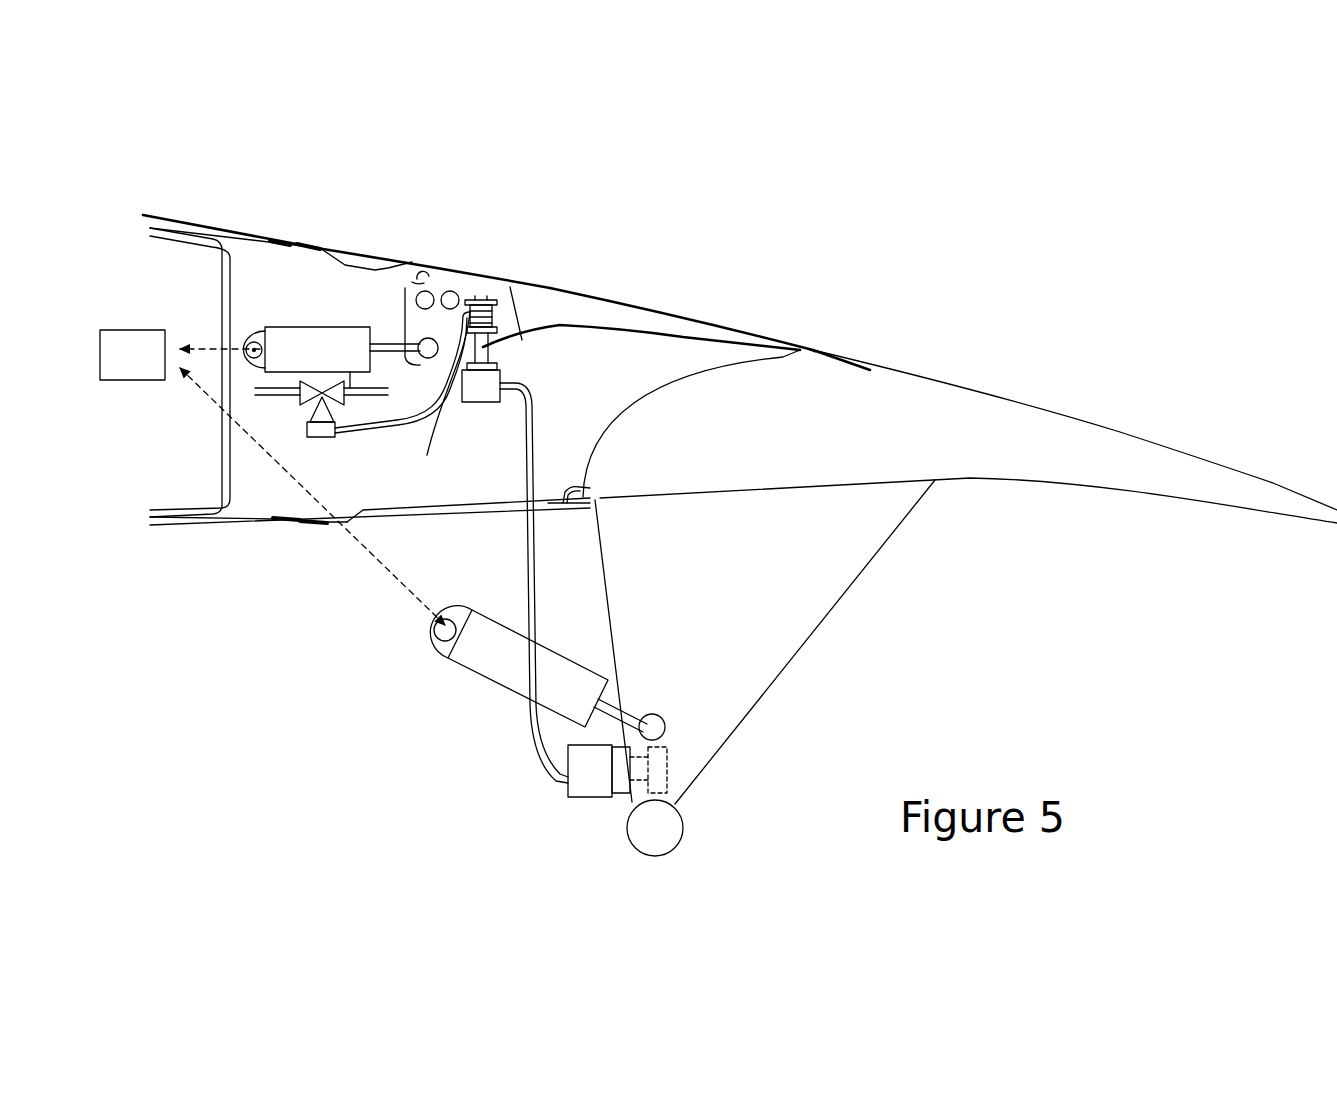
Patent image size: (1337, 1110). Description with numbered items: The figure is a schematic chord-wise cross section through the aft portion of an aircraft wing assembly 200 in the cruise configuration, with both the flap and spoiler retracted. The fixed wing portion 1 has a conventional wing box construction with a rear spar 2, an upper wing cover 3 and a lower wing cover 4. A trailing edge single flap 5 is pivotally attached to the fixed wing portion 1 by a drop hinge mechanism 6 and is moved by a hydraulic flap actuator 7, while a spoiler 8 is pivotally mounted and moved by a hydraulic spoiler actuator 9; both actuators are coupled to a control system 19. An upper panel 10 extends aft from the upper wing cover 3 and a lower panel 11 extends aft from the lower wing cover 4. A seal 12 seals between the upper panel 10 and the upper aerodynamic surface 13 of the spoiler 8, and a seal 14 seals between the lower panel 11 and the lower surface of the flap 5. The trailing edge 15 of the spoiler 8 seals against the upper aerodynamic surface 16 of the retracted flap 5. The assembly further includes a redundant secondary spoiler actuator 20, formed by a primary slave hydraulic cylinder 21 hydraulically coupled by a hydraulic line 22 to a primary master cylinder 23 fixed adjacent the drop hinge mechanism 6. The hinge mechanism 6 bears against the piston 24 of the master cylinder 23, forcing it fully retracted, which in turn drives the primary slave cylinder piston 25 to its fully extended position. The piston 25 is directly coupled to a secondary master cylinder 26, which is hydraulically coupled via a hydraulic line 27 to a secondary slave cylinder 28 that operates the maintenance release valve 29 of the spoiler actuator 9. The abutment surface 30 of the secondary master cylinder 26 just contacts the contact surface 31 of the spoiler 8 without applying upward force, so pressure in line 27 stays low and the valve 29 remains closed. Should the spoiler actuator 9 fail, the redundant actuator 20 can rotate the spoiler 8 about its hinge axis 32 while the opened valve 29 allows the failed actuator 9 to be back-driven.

The fixed wing portion 1 is at (224, 137).
The rear spar 2 is at (224, 458).
The upper wing cover 3 is at (237, 228).
The lower wing cover 4 is at (237, 523).
The trailing edge single flap 5 is at (980, 423).
The drop hinge mechanism 6 is at (715, 737).
The hydraulic flap actuator 7 is at (500, 662).
The spoiler 8 is at (560, 312).
The hydraulic spoiler actuator 9 is at (347, 348).
The upper panel 10 is at (353, 252).
The lower panel 11 is at (490, 505).
The seal 12 is at (428, 268).
The upper aerodynamic surface 13 is at (700, 316).
The seal 14 is at (577, 505).
The trailing edge 15 is at (813, 350).
The upper aerodynamic surface 16 is at (1120, 432).
The control system 19 is at (272, 477).
The redundant secondary spoiler actuator 20 is at (512, 365).
The primary slave hydraulic cylinder 21 is at (480, 383).
The hydraulic line 22 is at (537, 735).
The primary master cylinder 23 is at (592, 777).
The piston 24 is at (620, 782).
The primary slave cylinder piston 25 is at (428, 452).
The secondary master cylinder 26 is at (478, 310).
The hydraulic line 27 is at (381, 427).
The secondary slave cylinder 28 is at (322, 436).
The maintenance release valve 29 is at (320, 388).
The abutment surface 30 is at (496, 294).
The contact surface 31 is at (478, 292).
The hinge axis 32 is at (452, 290).
The aircraft wing assembly 200 is at (1113, 222).